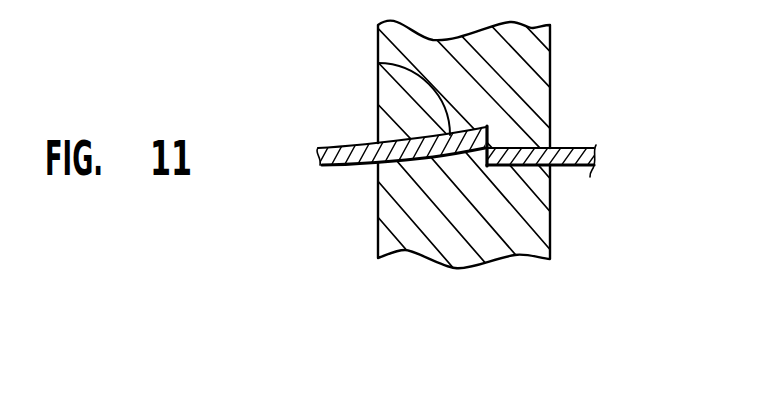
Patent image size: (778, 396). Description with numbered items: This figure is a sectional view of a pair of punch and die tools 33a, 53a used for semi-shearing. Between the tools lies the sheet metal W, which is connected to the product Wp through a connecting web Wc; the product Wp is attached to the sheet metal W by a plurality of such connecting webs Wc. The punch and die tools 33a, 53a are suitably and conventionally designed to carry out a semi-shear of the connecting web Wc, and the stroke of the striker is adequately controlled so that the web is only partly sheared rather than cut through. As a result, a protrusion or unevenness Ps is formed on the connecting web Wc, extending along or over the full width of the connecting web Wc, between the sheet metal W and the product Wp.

The punch tool 33a is at (534, 46).
The die tool 53a is at (542, 221).
The sheet metal W is at (333, 146).
The connecting web Wc is at (378, 63).
The product Wp is at (582, 148).
The protrusion or unevenness Ps is at (489, 131).